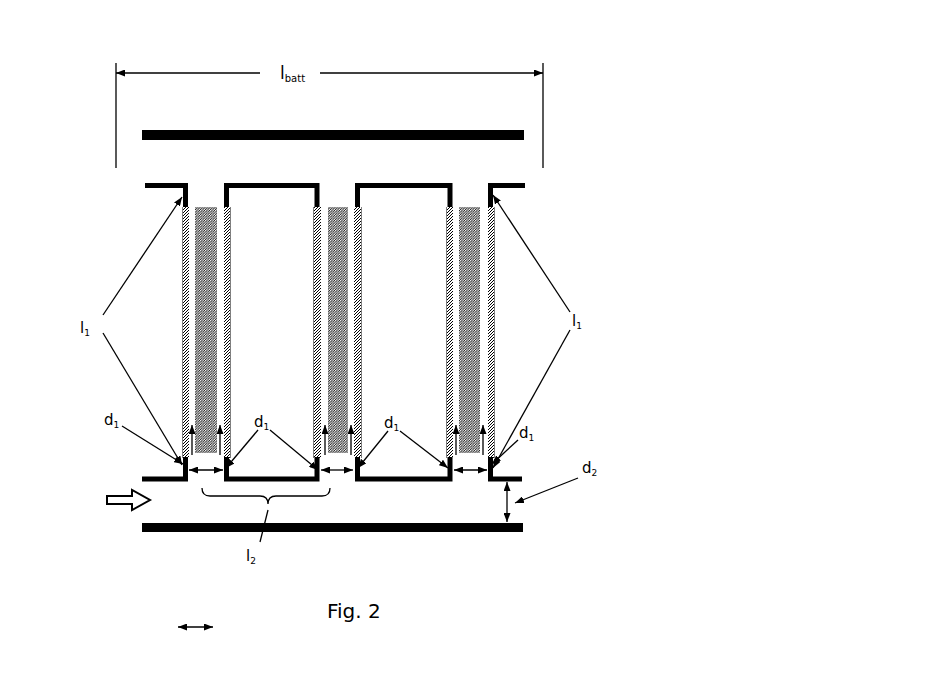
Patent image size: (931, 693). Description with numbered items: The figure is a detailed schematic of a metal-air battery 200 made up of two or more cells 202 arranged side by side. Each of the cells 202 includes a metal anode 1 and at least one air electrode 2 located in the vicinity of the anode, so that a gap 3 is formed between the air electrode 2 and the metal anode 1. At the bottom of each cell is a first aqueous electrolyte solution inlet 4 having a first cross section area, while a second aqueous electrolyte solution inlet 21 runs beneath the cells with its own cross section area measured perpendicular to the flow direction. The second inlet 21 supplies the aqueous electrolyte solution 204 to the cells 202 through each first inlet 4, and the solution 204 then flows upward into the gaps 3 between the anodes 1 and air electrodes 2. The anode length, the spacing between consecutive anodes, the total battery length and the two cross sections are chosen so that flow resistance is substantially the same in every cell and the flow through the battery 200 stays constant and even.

The metal-air battery 200 is at (82, 202).
The cells 202 is at (465, 175).
The metal anode 1 is at (335, 227).
The air electrode 2 is at (357, 286).
The gap 3 is at (352, 352).
The first aqueous electrolyte solution inlet 4 is at (202, 482).
The aqueous electrolyte solution 204 is at (183, 517).
The second aqueous electrolyte solution inlet 21 is at (108, 478).